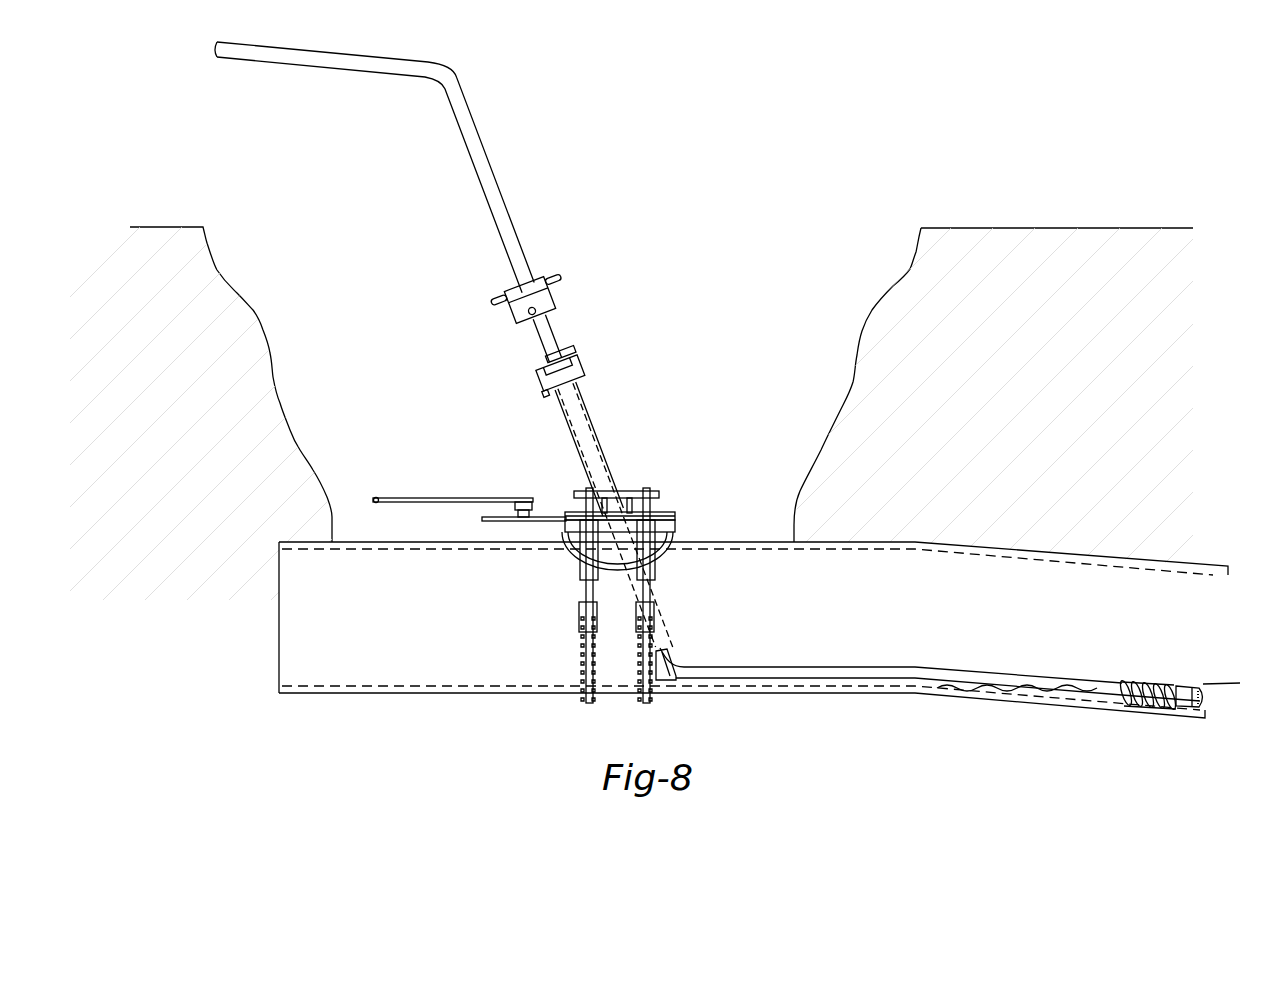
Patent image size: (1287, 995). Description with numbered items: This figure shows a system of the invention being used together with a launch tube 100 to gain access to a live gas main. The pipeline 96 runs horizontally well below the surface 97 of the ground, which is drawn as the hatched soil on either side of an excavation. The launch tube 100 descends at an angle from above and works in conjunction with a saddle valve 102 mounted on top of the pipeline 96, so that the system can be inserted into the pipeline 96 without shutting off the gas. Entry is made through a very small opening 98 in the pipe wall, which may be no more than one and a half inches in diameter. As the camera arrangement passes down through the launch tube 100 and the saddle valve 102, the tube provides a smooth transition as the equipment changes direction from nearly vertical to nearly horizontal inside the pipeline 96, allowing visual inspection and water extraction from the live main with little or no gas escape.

The surface of the ground 97 is at (1013, 227).
The pipeline 96 is at (999, 548).
The launch tube 100 is at (600, 458).
The saddle valve 102 is at (665, 512).
The opening 98 is at (611, 562).